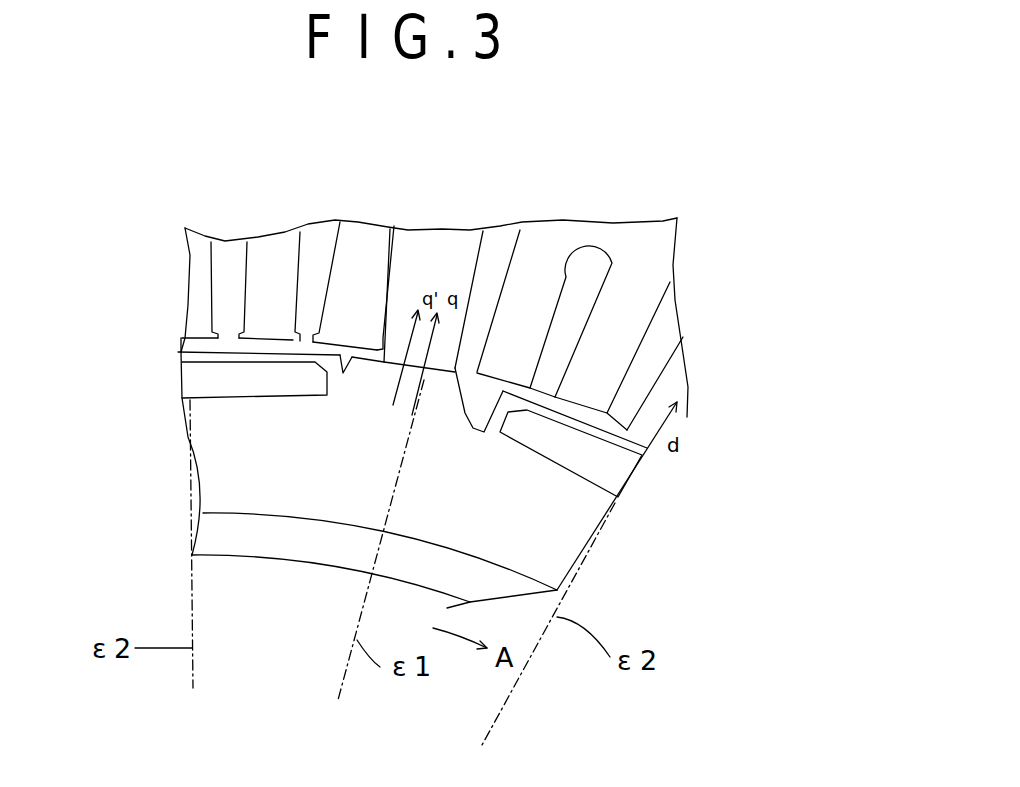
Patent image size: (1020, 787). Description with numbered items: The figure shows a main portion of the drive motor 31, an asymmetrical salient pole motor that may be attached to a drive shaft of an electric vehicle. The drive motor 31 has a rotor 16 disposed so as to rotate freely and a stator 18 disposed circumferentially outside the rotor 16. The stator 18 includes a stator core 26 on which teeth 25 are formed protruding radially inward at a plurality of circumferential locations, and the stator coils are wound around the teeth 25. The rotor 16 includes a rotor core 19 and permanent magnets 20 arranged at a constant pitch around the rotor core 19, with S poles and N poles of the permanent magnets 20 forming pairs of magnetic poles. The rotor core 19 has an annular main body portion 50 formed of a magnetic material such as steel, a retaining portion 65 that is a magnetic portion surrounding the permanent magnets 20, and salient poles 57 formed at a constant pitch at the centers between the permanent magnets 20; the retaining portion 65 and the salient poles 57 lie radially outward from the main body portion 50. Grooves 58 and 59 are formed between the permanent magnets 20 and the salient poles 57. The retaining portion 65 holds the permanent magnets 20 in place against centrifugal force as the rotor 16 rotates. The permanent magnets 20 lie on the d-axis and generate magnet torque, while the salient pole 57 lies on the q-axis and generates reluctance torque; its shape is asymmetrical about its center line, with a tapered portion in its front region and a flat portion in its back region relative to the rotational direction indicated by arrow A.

The rotor 16 is at (247, 560).
The stator 18 is at (618, 205).
The rotor core 19 is at (247, 450).
The permanent magnet 20 is at (195, 373).
The tooth 25 is at (632, 300).
The stator core 26 is at (544, 270).
The drive motor 31 is at (703, 207).
The main body portion 50 is at (288, 495).
The salient pole 57 is at (380, 372).
The groove 58 is at (475, 412).
The groove 59 is at (343, 376).
The retaining portion 65 is at (267, 352).